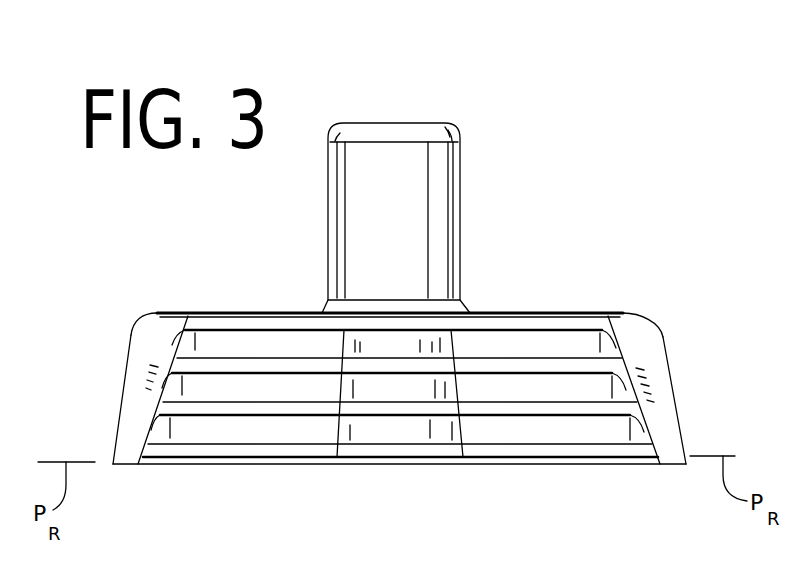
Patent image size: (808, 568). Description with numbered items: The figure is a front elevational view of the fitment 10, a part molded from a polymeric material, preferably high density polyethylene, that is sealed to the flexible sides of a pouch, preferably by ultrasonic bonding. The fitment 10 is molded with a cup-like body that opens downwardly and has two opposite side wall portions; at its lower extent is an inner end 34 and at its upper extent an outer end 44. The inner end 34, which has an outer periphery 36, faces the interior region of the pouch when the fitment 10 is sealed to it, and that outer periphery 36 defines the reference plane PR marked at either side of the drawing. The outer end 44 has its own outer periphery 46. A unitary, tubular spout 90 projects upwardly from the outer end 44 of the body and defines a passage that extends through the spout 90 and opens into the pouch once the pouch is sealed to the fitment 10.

The fitment 10 is at (636, 182).
The inner end 34 is at (505, 464).
The outer periphery of the inner end 36 is at (663, 464).
The outer end 44 is at (497, 312).
The outer periphery of the outer end 46 is at (607, 312).
The tubular spout 90 is at (443, 192).